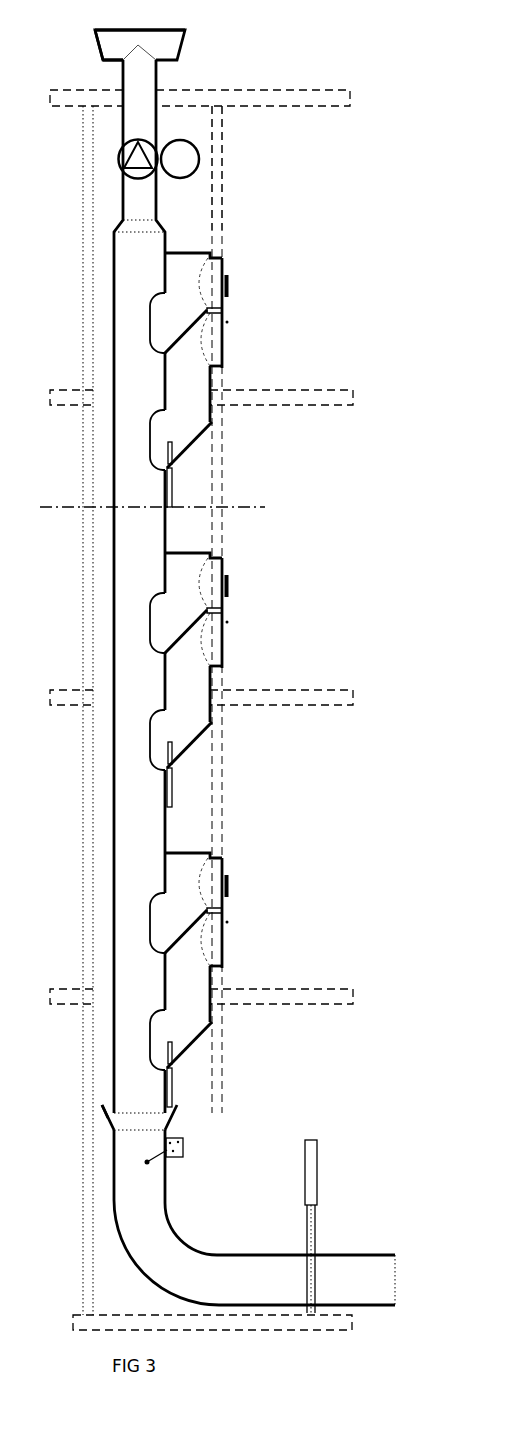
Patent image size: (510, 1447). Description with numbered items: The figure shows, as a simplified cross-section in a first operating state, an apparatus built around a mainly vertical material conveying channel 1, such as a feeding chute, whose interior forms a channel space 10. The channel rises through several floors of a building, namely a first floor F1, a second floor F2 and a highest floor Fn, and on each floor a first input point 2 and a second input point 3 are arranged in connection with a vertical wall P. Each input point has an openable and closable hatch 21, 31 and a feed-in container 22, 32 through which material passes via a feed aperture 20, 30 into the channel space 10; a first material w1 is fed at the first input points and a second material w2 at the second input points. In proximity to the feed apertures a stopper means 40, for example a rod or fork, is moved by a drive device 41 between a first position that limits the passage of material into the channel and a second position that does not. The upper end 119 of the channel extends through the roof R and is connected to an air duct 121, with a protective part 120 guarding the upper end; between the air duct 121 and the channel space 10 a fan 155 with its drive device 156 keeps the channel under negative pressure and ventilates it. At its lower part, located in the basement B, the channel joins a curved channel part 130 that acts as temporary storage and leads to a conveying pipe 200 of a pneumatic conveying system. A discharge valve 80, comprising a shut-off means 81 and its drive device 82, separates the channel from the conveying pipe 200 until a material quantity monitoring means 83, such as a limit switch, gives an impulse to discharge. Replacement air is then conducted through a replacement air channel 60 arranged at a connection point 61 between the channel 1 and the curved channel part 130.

The material conveying channel 1 is at (101, 326).
The channel space 10 is at (122, 372).
The upper end 119 is at (178, 41).
The protective part 120 is at (118, 30).
The air duct 121 is at (100, 50).
The roof R is at (82, 96).
The vertical wall P is at (222, 137).
The fan 155 is at (166, 179).
The drive device 156 is at (196, 164).
The feed-in container 22 is at (172, 253).
The first input point 2 is at (234, 262).
The hatch 21 is at (237, 292).
The feed aperture 20 is at (161, 325).
The second input point 3 is at (234, 335).
The hatch 31 is at (230, 348).
The feed aperture 30 is at (161, 419).
The feed-in container 32 is at (217, 418).
The stopper means 40 is at (173, 453).
The drive device 41 is at (172, 483).
The highest floor Fn is at (285, 397).
The second floor F2 is at (292, 697).
The first floor F1 is at (287, 993).
The first material w1 is at (353, 282).
The second material w2 is at (353, 346).
The replacement air channel 60 is at (100, 1100).
The connection point 61 is at (100, 1107).
The curved channel part 130 is at (150, 1278).
The conveying pipe 200 is at (395, 1283).
The material quantity monitoring means 83 is at (187, 1150).
The drive device 82 is at (313, 1180).
The discharge valve 80 is at (307, 1243).
The shut-off means 81 is at (307, 1282).
The basement B is at (225, 1325).